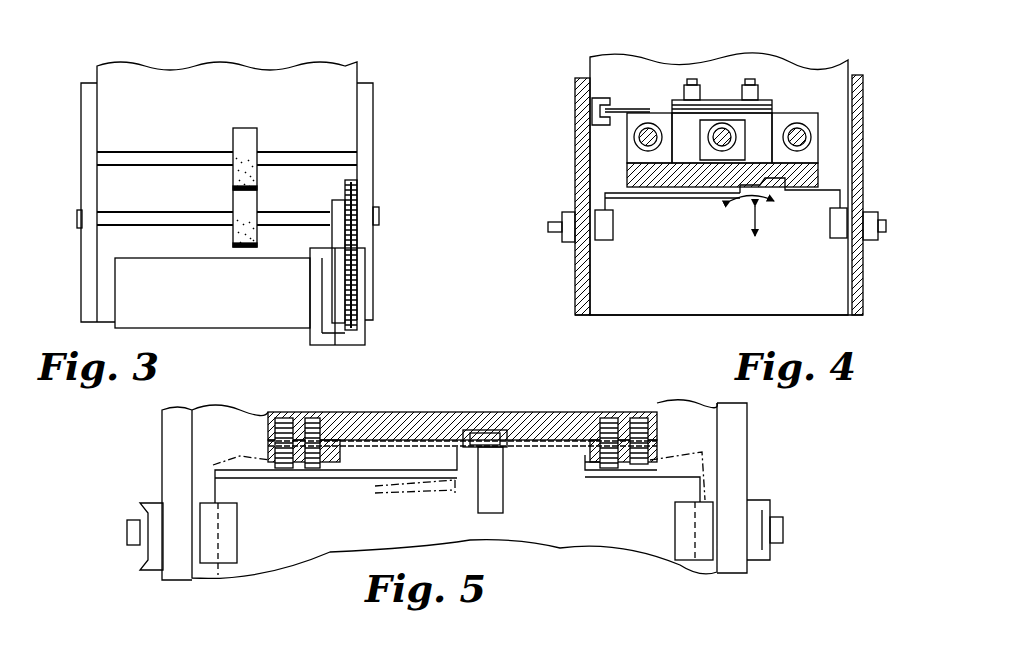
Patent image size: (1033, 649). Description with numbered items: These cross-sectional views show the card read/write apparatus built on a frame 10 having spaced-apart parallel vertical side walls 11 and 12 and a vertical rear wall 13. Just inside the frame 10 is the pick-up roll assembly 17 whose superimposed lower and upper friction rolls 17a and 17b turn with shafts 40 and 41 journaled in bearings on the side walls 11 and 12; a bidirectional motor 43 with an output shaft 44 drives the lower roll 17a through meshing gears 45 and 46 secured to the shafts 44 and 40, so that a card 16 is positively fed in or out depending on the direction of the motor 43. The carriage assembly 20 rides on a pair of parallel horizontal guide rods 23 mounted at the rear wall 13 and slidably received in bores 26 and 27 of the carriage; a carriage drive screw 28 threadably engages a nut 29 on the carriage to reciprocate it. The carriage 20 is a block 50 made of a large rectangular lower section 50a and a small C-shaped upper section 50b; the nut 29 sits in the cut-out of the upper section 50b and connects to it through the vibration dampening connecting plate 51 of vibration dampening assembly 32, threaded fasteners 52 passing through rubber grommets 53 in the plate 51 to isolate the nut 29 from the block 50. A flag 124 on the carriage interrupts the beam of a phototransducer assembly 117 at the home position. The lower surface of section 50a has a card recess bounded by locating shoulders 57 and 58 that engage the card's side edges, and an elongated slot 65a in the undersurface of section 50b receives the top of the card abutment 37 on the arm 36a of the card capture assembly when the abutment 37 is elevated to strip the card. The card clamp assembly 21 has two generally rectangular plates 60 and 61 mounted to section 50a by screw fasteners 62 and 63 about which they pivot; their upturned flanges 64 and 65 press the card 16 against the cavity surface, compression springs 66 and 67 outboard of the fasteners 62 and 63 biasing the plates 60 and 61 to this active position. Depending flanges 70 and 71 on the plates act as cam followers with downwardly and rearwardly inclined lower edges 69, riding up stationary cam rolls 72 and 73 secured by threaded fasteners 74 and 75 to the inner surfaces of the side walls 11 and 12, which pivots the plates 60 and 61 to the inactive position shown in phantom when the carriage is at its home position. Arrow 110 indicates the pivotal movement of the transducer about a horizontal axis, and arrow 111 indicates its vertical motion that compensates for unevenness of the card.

In FIG. 3, the frame 10 is at (230, 180).
In FIG. 4, the frame 10 is at (730, 157).
In FIG. 5, the frame 10 is at (470, 493).
In FIG. 3, the side wall 11 is at (82, 192).
In FIG. 4, the side wall 11 is at (582, 88).
In FIG. 5, the side wall 11 is at (170, 466).
In FIG. 3, the side wall 12 is at (378, 128).
In FIG. 4, the side wall 12 is at (862, 158).
In FIG. 5, the side wall 12 is at (735, 560).
In FIG. 3, the rear wall 13 is at (360, 70).
In FIG. 4, the rear wall 13 is at (850, 60).
In FIG. 5, the rear wall 13 is at (225, 418).
In FIG. 5, the card 16 is at (522, 450).
In FIG. 3, the pick-up roll assembly 17 is at (230, 202).
In FIG. 3, the lower friction roll 17a is at (243, 247).
In FIG. 3, the upper friction roll 17b is at (250, 128).
In FIG. 4, the carriage assembly 20 is at (719, 94).
In FIG. 5, the carriage assembly 20 is at (489, 410).
In FIG. 4, the card clamp assembly 21 is at (600, 198).
In FIG. 5, the card clamp assembly 21 is at (459, 493).
In FIG. 4, the guide rods 23 is at (650, 125).
In FIG. 4, the bore 26 is at (830, 128).
In FIG. 4, the bore 27 is at (630, 150).
In FIG. 4, the carriage drive screw 28 is at (722, 125).
In FIG. 4, the nut 29 is at (712, 85).
In FIG. 4, the vibration dampening assembly 32 is at (775, 96).
In FIG. 5, the arm 36a is at (510, 429).
In FIG. 5, the card abutment 37 is at (500, 430).
In FIG. 3, the shaft 40 is at (160, 228).
In FIG. 3, the shaft 41 is at (165, 150).
In FIG. 3, the bidirectional motor 43 is at (255, 330).
In FIG. 3, the output shaft 44 is at (328, 300).
In FIG. 3, the gear 45 is at (355, 300).
In FIG. 3, the gear 46 is at (357, 252).
In FIG. 4, the carriage block 50 is at (822, 170).
In FIG. 4, the lower section 50a is at (800, 192).
In FIG. 5, the lower section 50a is at (420, 425).
In FIG. 4, the upper section 50b is at (625, 136).
In FIG. 5, the upper section 50b is at (360, 396).
In FIG. 4, the vibration dampening connecting plate 51 is at (755, 88).
In FIG. 4, the threaded fasteners 52 is at (692, 82).
In FIG. 4, the rubber grommets 53 is at (770, 100).
In FIG. 4, the locating shoulder 57 is at (690, 198).
In FIG. 5, the locating shoulder 57 is at (365, 480).
In FIG. 5, the locating shoulder 58 is at (608, 418).
In FIG. 4, the clamp plate 60 is at (700, 200).
In FIG. 5, the clamp plate 60 is at (350, 480).
In FIG. 4, the clamp plate 61 is at (818, 195).
In FIG. 5, the clamp plate 61 is at (640, 468).
In FIG. 5, the screw fastener 62 is at (318, 418).
In FIG. 5, the screw fastener 63 is at (640, 420).
In FIG. 5, the upturned flange 64 is at (430, 483).
In FIG. 5, the upturned flange 65 is at (588, 472).
In FIG. 5, the elongated slot 65a is at (485, 432).
In FIG. 5, the compression spring 66 is at (284, 418).
In FIG. 5, the compression spring 67 is at (650, 415).
In FIG. 5, the inclined lower edge 69 is at (215, 575).
In FIG. 5, the depending flange 70 is at (236, 492).
In FIG. 5, the depending flange 71 is at (694, 493).
In FIG. 4, the cam roll 72 is at (605, 242).
In FIG. 5, the cam roll 72 is at (237, 565).
In FIG. 4, the cam roll 73 is at (847, 235).
In FIG. 5, the cam roll 73 is at (678, 540).
In FIG. 4, the threaded fastener 74 is at (563, 244).
In FIG. 5, the threaded fastener 74 is at (135, 555).
In FIG. 4, the threaded fastener 75 is at (886, 228).
In FIG. 5, the threaded fastener 75 is at (783, 517).
In FIG. 4, the arrow 110 is at (747, 207).
In FIG. 4, the arrow 111 is at (768, 225).
In FIG. 4, the phototransducer assembly 117 is at (597, 103).
In FIG. 4, the flag 124 is at (607, 113).